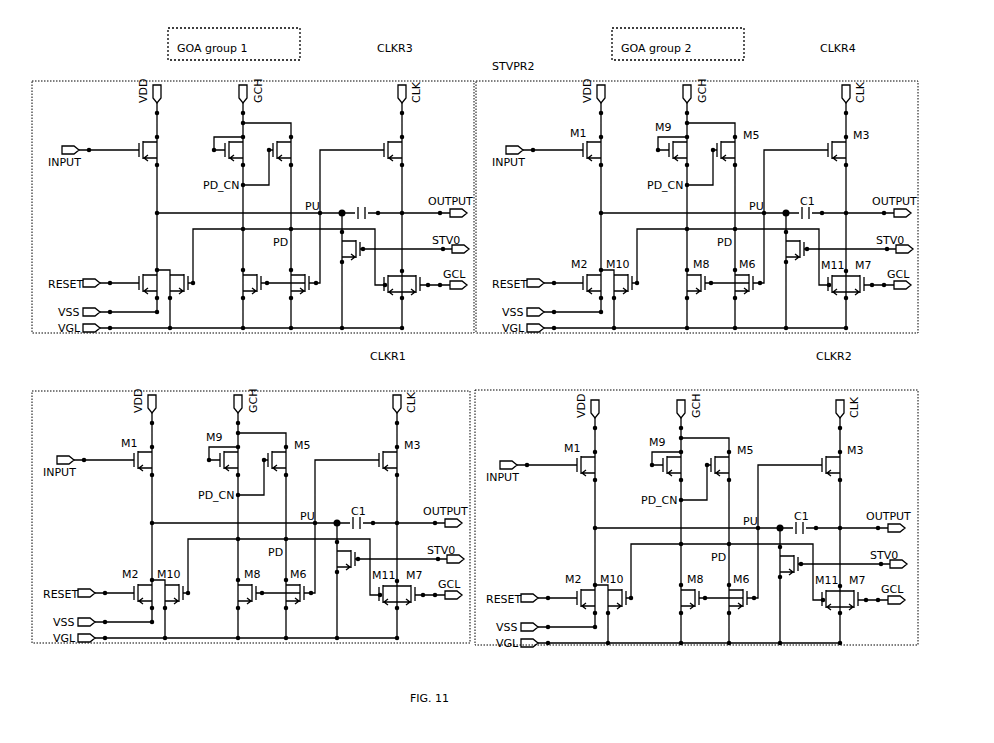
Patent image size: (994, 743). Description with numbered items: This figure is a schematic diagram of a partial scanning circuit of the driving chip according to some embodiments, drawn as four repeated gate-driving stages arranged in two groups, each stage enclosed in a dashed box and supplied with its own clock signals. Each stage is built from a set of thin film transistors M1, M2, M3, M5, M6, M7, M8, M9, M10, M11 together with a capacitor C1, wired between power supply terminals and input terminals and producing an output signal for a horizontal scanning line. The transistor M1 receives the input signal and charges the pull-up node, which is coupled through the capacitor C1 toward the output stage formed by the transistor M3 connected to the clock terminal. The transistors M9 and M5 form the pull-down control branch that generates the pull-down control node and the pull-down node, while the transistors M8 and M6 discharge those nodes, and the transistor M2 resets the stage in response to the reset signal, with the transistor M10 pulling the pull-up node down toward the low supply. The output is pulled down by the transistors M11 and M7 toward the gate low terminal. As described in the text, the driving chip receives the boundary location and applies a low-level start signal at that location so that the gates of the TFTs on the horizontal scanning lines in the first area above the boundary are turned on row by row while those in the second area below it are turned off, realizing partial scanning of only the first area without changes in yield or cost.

The first transistor (pull-up control / input transistor) M1 is at (141, 144).
The second transistor (reset transistor) M2 is at (142, 276).
The third transistor (output pull-up transistor) M3 is at (405, 145).
The fifth transistor (pull-down control transistor) M5 is at (294, 145).
The sixth transistor (PD pull-down transistor) M6 is at (301, 276).
The seventh transistor (output pull-down transistor) M7 is at (415, 277).
The eighth transistor (PD_CN pull-down transistor) M8 is at (254, 276).
The ninth transistor (pull-down control input transistor) M9 is at (227, 141).
The tenth transistor (PU pull-down transistor) M10 is at (175, 276).
The eleventh transistor (output pull-down transistor) M11 is at (389, 277).
The bootstrap capacitor C1 is at (363, 207).